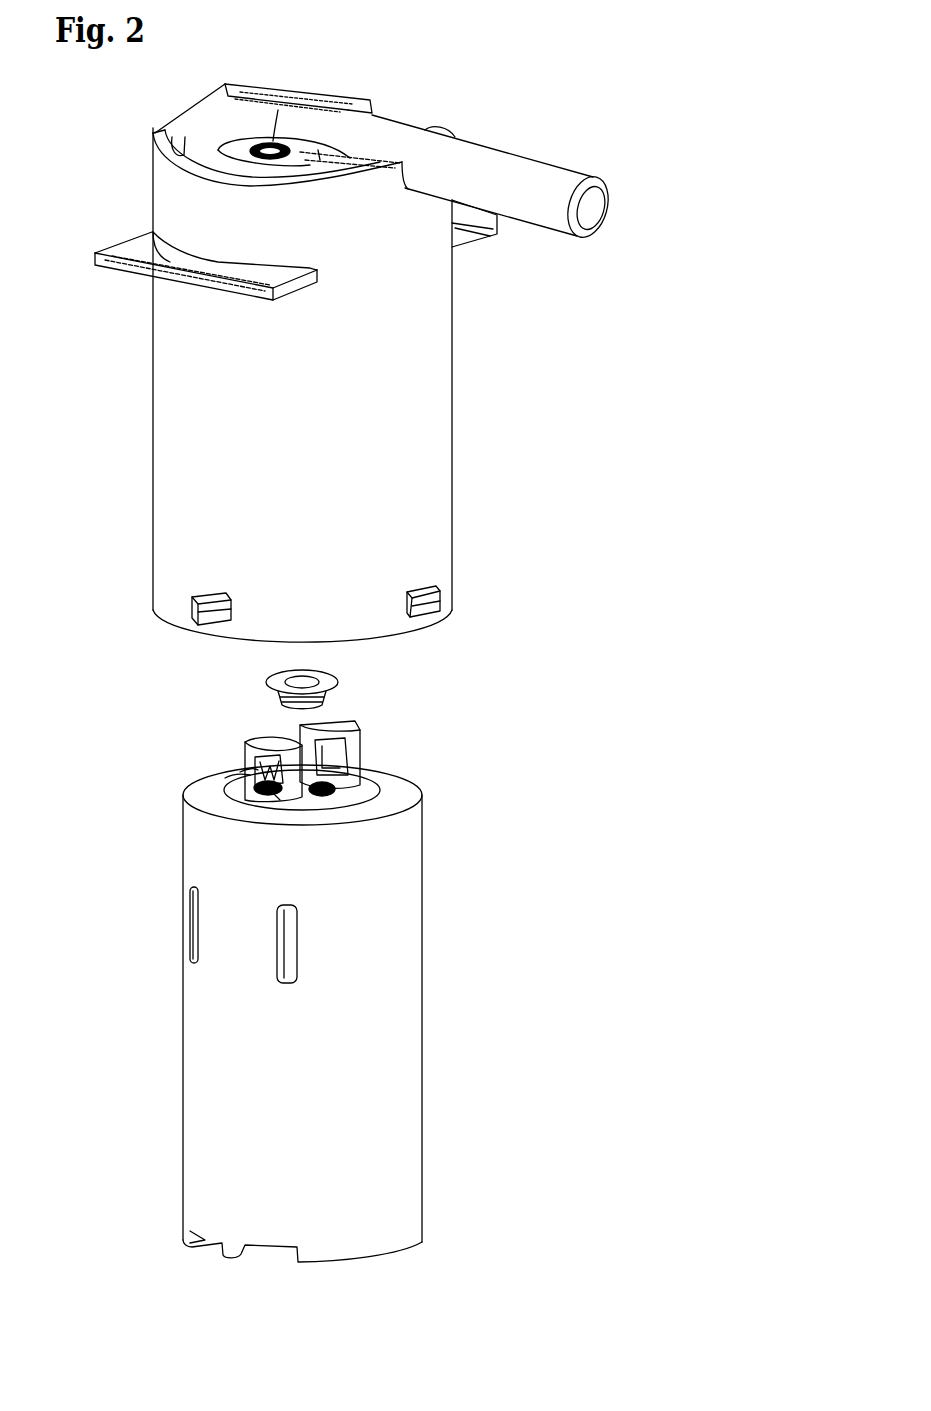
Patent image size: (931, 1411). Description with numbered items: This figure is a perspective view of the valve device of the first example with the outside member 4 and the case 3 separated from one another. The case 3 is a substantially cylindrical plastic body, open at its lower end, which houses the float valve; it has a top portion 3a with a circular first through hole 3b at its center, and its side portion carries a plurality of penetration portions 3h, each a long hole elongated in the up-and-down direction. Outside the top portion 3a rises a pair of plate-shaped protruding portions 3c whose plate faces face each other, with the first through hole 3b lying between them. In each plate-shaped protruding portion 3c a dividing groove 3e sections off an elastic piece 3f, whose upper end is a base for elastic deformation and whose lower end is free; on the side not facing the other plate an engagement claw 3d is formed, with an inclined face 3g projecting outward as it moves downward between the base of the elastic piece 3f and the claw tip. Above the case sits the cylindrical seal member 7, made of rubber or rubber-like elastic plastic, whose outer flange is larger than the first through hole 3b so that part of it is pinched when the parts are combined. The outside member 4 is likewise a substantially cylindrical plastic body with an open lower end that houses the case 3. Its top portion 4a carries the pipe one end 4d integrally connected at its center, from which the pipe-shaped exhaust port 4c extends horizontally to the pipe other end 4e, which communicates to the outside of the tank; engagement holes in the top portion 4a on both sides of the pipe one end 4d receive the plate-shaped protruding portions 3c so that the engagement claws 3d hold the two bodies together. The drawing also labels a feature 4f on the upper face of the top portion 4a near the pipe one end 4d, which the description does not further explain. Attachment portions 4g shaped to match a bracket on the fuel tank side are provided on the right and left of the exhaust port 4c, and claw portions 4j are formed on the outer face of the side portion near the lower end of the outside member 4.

The case 3 is at (378, 1097).
The top portion 3a is at (400, 782).
The first through hole 3b is at (330, 788).
The plate-shaped protruding portions 3c is at (247, 752).
The engagement claw 3d is at (230, 777).
The dividing groove 3e is at (242, 774).
The elastic piece 3f is at (272, 792).
The inclined face 3g is at (266, 782).
The penetration portions 3h is at (190, 926).
The outside member 4 is at (418, 452).
The top portion 4a is at (206, 150).
The exhaust port 4c is at (555, 180).
The pipe one end 4d is at (285, 120).
The pipe other end 4e is at (596, 212).
The hole in top plate 4f is at (265, 166).
The attachment portions 4g is at (108, 268).
The claw portions 4j is at (180, 600).
The cylindrical seal member 7 is at (340, 684).